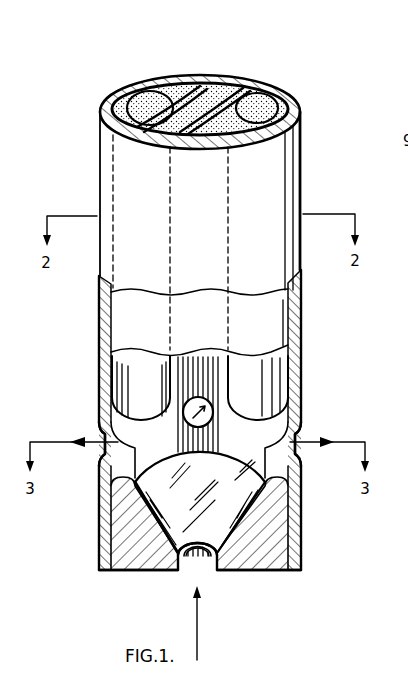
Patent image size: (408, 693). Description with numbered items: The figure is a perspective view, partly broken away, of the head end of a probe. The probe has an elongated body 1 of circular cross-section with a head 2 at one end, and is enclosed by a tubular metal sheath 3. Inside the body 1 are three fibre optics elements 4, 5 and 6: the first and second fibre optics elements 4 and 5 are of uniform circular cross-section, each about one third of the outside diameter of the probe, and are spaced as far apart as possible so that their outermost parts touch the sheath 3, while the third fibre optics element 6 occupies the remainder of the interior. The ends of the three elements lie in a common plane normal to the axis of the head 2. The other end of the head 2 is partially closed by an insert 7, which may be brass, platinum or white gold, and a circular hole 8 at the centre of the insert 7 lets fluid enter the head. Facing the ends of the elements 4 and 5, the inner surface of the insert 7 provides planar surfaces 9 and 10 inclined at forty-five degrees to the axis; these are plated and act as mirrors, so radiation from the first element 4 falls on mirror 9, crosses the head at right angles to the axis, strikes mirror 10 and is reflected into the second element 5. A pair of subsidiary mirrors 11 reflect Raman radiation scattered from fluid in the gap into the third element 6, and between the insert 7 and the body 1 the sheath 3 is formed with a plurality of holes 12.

The body 1 is at (304, 129).
The head 2 is at (302, 514).
The tubular metal sheath 3 is at (130, 165).
The first fibre optics element 4 is at (150, 92).
The second fibre optics element 5 is at (270, 95).
The third fibre optics element 6 is at (205, 92).
The insert 7 is at (265, 553).
The circular hole 8 is at (191, 556).
The planar surface (mirror) 9 is at (160, 527).
The planar surface (mirror) 10 is at (240, 527).
The subsidiary mirrors 11 is at (198, 528).
The holes 12 is at (103, 432).